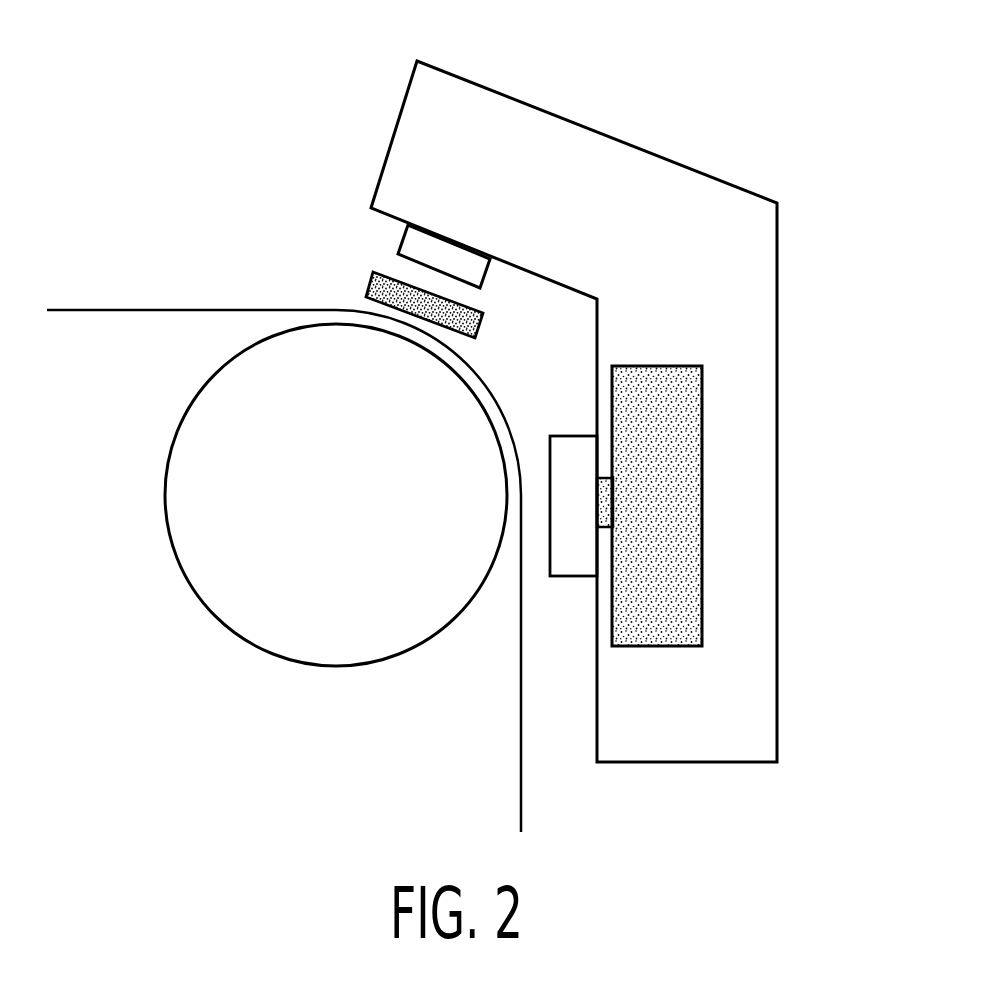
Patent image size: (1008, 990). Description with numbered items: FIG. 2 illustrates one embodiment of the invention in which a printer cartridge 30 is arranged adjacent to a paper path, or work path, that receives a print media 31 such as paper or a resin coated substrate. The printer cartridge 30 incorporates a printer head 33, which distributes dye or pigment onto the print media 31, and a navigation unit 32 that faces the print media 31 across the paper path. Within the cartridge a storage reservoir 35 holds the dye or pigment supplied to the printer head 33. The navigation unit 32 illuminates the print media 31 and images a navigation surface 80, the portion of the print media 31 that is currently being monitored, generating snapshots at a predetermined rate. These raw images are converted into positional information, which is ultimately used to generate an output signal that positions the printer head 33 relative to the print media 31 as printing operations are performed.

The printer cartridge 30 is at (780, 488).
The print media 31 is at (98, 308).
The navigation unit 32 is at (403, 237).
The printer head 33 is at (568, 585).
The storage reservoir 35 is at (660, 555).
The navigation surface 80 is at (368, 290).